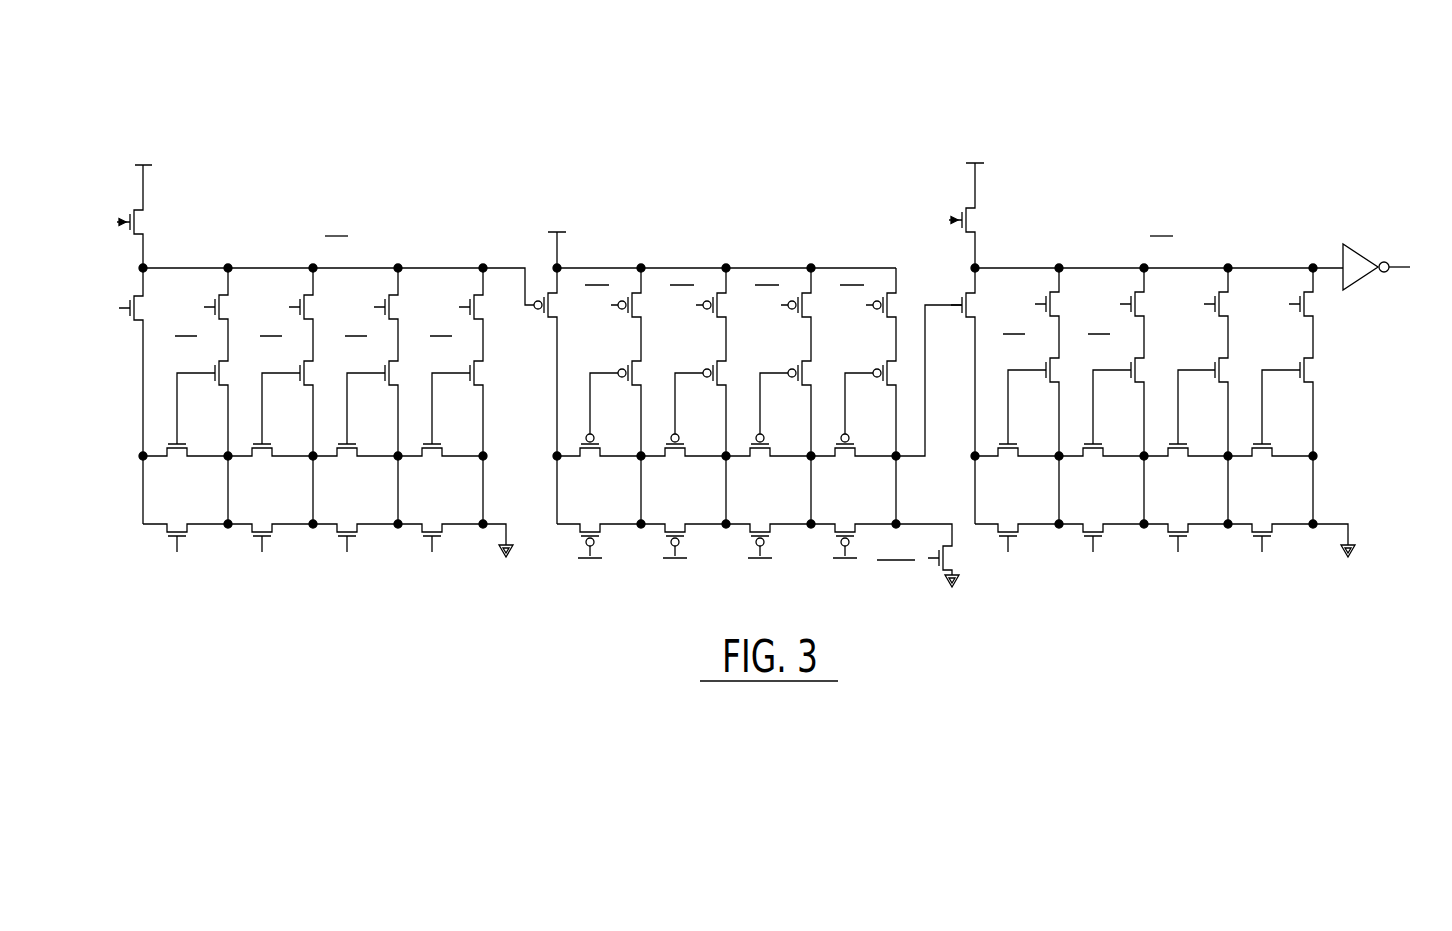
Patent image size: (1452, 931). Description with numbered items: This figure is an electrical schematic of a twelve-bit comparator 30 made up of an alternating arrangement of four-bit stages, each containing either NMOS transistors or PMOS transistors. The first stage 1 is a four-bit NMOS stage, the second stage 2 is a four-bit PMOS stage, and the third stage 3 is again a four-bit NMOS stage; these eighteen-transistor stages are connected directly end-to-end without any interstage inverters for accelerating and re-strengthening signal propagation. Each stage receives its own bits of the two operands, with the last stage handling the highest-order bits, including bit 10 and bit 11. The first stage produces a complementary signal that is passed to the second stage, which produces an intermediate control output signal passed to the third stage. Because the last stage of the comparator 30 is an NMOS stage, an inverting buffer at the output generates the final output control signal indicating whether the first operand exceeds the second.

The 12-bit comparator 30 is at (1230, 128).
The first stage NMOS 1 is at (423, 220).
The second stage PMOS 2 is at (827, 220).
The third stage NMOS 3 is at (1247, 220).
The bit 10 transistor cell 10 is at (1200, 334).
The bit 11 transistor cell 11 is at (1284, 334).